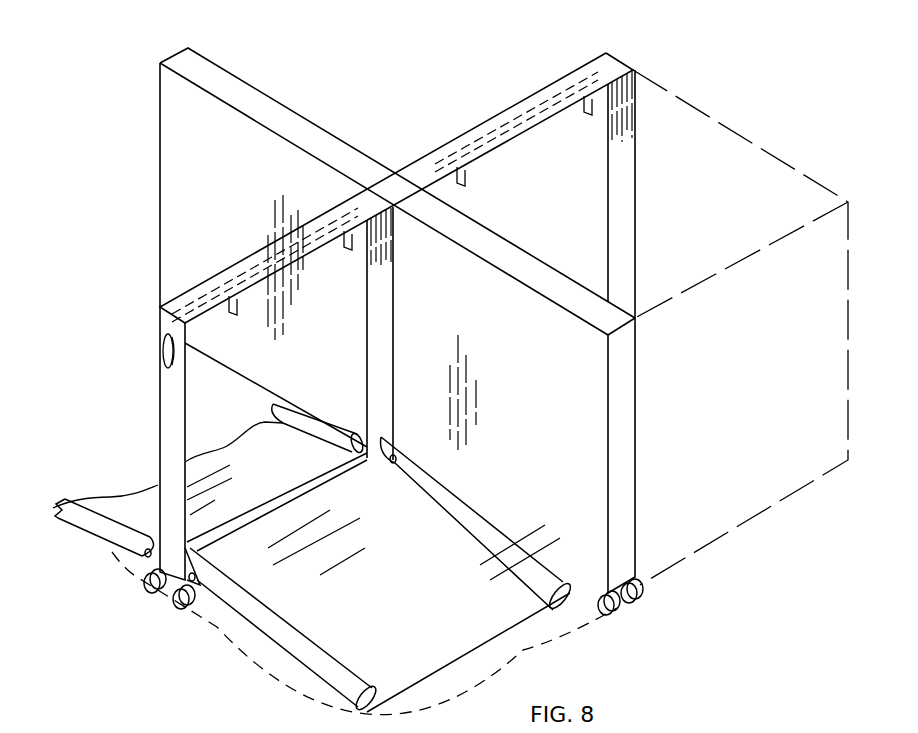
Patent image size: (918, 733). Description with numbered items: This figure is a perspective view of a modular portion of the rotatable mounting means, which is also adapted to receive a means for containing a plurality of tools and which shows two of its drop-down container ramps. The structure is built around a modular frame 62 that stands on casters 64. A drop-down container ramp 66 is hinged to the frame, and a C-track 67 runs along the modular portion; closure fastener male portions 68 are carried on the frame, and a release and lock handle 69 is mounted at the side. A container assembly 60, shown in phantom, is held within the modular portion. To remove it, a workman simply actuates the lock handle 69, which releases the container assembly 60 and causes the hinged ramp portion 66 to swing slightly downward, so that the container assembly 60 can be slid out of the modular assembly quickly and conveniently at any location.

The container assembly 60 is at (753, 128).
The modular frame 62 is at (253, 100).
The casters 64 is at (178, 609).
The drop-down container ramp 66 is at (127, 500).
The C-track 67 is at (88, 523).
The closure fastener male portions 68 is at (589, 110).
The release and lock handle 69 is at (162, 352).